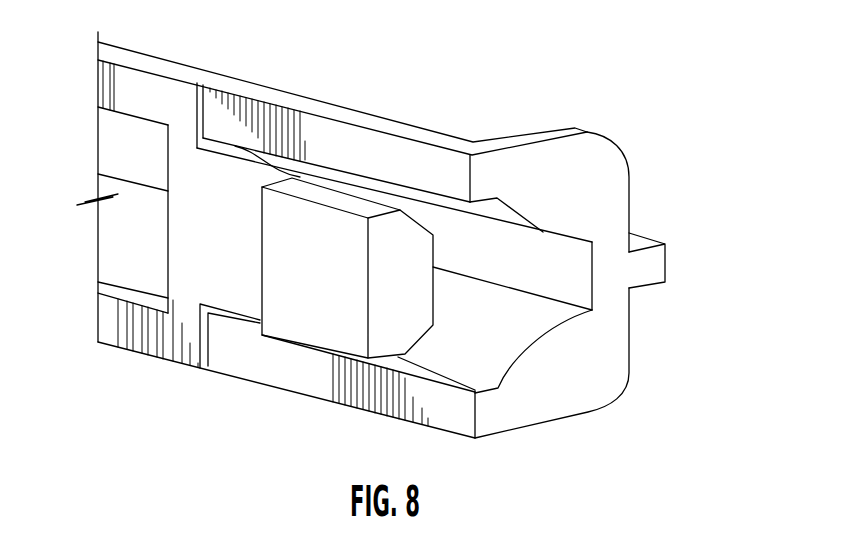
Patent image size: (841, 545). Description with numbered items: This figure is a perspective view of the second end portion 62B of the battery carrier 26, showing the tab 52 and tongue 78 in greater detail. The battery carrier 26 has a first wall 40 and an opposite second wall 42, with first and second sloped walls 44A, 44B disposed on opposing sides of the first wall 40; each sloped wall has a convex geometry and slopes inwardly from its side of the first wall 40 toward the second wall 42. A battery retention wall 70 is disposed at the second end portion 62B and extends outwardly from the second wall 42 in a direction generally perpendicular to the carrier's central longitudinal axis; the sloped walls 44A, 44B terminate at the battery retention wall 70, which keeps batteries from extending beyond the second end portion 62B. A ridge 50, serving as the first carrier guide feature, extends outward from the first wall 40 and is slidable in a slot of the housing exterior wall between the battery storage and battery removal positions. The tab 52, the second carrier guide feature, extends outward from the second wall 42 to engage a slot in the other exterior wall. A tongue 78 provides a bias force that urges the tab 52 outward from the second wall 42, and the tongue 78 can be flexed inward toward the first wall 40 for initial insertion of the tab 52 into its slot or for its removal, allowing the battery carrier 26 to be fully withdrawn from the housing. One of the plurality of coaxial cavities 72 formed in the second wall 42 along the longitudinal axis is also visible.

The battery carrier 26 is at (256, 57).
The second wall 42 is at (128, 85).
The cavities 72 is at (162, 245).
The second sloped wall 44B is at (125, 270).
The first sloped wall 44A is at (494, 210).
The tongue 78 is at (238, 290).
The tab 52 is at (333, 310).
The first wall 40 is at (458, 262).
The battery retention wall 70 is at (598, 172).
The ridge 50 is at (648, 268).
The second end portion 62B is at (652, 362).